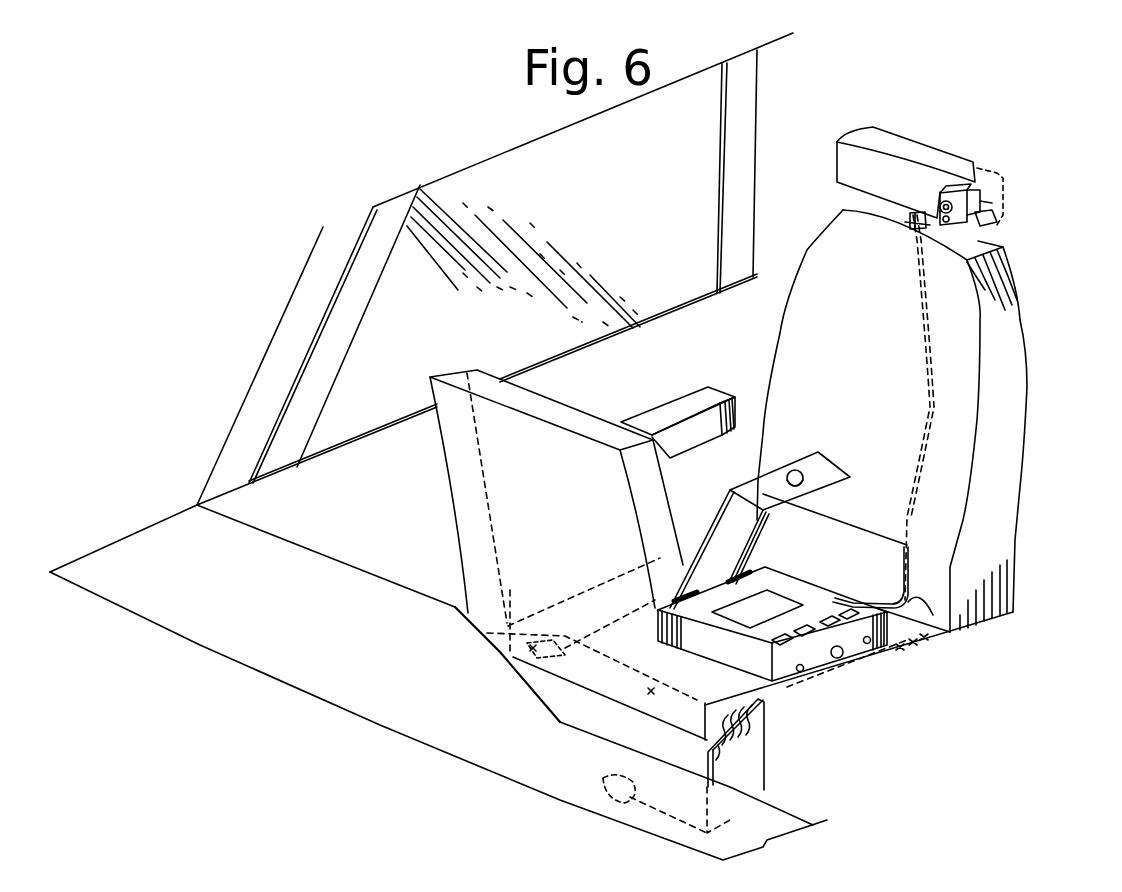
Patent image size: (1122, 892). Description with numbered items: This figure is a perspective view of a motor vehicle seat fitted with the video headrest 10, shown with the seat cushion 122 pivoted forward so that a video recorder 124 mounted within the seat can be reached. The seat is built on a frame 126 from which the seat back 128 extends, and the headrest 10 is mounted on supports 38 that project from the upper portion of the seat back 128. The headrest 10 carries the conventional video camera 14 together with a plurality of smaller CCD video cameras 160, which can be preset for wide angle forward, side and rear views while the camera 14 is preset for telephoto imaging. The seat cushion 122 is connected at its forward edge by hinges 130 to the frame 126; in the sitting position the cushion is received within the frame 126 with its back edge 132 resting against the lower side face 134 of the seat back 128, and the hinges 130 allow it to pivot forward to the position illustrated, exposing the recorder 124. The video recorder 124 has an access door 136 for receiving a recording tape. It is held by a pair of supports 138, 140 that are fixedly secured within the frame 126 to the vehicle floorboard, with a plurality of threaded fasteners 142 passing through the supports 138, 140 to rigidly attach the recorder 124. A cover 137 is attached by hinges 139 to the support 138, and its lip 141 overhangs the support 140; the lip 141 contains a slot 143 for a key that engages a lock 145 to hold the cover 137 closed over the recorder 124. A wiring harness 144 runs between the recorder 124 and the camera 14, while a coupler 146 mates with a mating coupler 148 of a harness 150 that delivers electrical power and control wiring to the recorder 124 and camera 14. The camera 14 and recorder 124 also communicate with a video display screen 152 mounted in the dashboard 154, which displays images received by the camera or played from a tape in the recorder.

The video headrest 10 is at (853, 158).
The video camera 14 is at (955, 192).
The supports 38 is at (908, 219).
The seat cushion 122 is at (537, 537).
The video recorder 124 is at (740, 633).
The frame 126 is at (830, 690).
The seat back 128 is at (1003, 362).
The hinges 130 is at (553, 657).
The back edge 132 is at (553, 403).
The lower side face 134 is at (907, 540).
The access door 136 is at (772, 603).
The cover 137 is at (743, 547).
The support 138 is at (763, 573).
The hinges 139 is at (697, 593).
The support 140 is at (917, 635).
The lip 141 is at (770, 483).
The threaded fasteners 142 is at (813, 687).
The slot 143 is at (807, 480).
The wiring harness 144 is at (910, 563).
The lock 145 is at (863, 660).
The coupler 146 is at (950, 632).
The mating coupler 148 is at (907, 648).
The harness 150 is at (893, 672).
The video display screen 152 is at (760, 757).
The dashboard 154 is at (345, 593).
The video cameras 160 is at (972, 165).